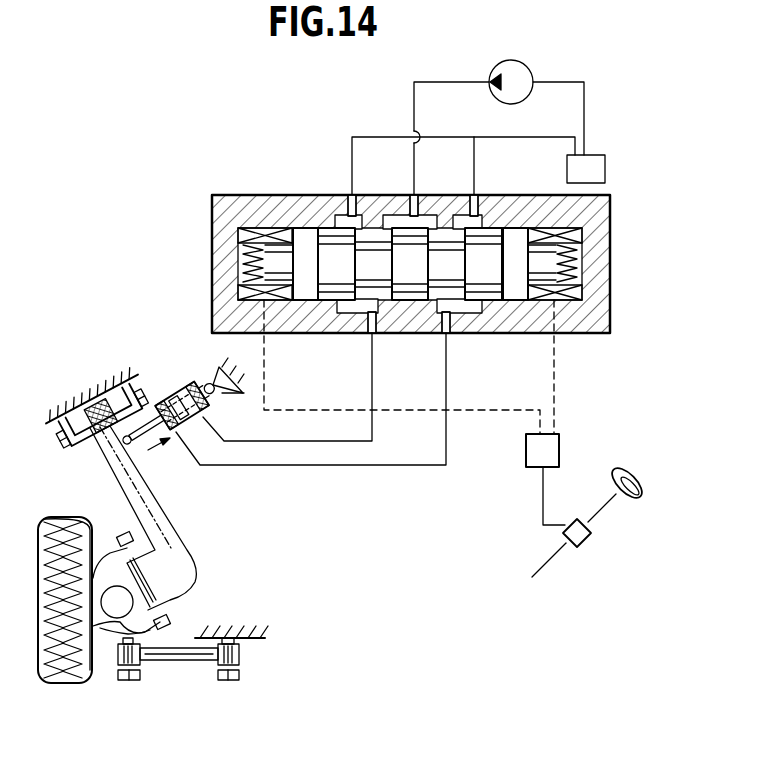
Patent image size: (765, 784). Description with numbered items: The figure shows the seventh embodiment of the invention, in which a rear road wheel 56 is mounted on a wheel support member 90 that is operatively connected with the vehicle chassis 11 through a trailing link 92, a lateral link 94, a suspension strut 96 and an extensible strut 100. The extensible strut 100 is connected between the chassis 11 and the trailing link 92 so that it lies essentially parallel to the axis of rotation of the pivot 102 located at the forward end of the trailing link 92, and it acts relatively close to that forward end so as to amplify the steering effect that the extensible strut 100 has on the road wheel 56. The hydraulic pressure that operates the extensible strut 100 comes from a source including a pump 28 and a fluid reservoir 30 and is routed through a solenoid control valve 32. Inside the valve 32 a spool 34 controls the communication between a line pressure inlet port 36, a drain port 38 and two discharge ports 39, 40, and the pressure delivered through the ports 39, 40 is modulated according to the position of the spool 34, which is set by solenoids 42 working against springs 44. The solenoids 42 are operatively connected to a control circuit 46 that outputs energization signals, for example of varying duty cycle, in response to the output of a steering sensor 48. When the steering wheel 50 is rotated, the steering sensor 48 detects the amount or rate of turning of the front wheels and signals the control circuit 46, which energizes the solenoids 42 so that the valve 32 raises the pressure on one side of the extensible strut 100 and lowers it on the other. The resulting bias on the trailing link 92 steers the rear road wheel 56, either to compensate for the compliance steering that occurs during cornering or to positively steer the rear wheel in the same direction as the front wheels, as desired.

The vehicle chassis 11 is at (266, 636).
The pump 28 is at (524, 72).
The fluid reservoir 30 is at (594, 155).
The solenoid control valve 32 is at (391, 232).
The spool 34 is at (275, 252).
The line pressure inlet port 36 is at (409, 195).
The drain port 38 is at (347, 195).
The discharge port 39 is at (366, 334).
The discharge port 40 is at (440, 334).
The solenoids 42 is at (252, 296).
The springs 44 is at (243, 266).
The control circuit 46 is at (526, 456).
The steering sensor 48 is at (563, 538).
The steering wheel 50 is at (634, 500).
The road wheel 56 is at (72, 684).
The wheel support member 90 is at (122, 636).
The trailing link 92 is at (184, 572).
The lateral link 94 is at (198, 660).
The suspension strut 96 is at (157, 610).
The extensible strut 100 is at (180, 392).
The pivot 102 is at (88, 405).